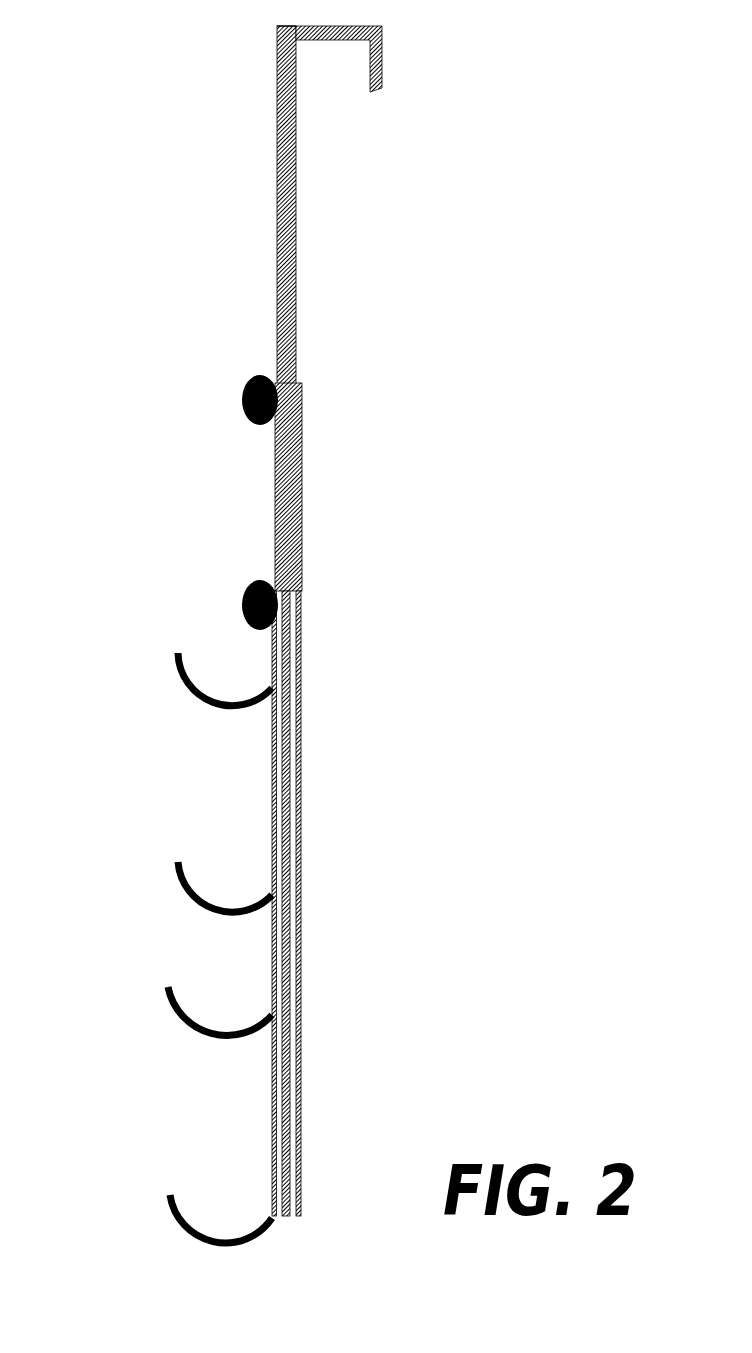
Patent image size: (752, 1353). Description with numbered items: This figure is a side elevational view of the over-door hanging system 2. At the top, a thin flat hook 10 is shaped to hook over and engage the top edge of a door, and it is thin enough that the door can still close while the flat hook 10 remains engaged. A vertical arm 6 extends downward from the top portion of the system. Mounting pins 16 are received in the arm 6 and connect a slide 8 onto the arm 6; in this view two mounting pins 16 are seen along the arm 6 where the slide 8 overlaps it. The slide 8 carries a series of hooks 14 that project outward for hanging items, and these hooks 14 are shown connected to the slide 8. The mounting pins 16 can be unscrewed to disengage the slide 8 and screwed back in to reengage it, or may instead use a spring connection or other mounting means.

The over-door hanging system 2 is at (104, 103).
The vertical arm 6 is at (293, 275).
The slide 8 is at (295, 700).
The flat hook 10 is at (380, 88).
The hook 14 is at (183, 680).
The mounting pin 16 is at (258, 585).